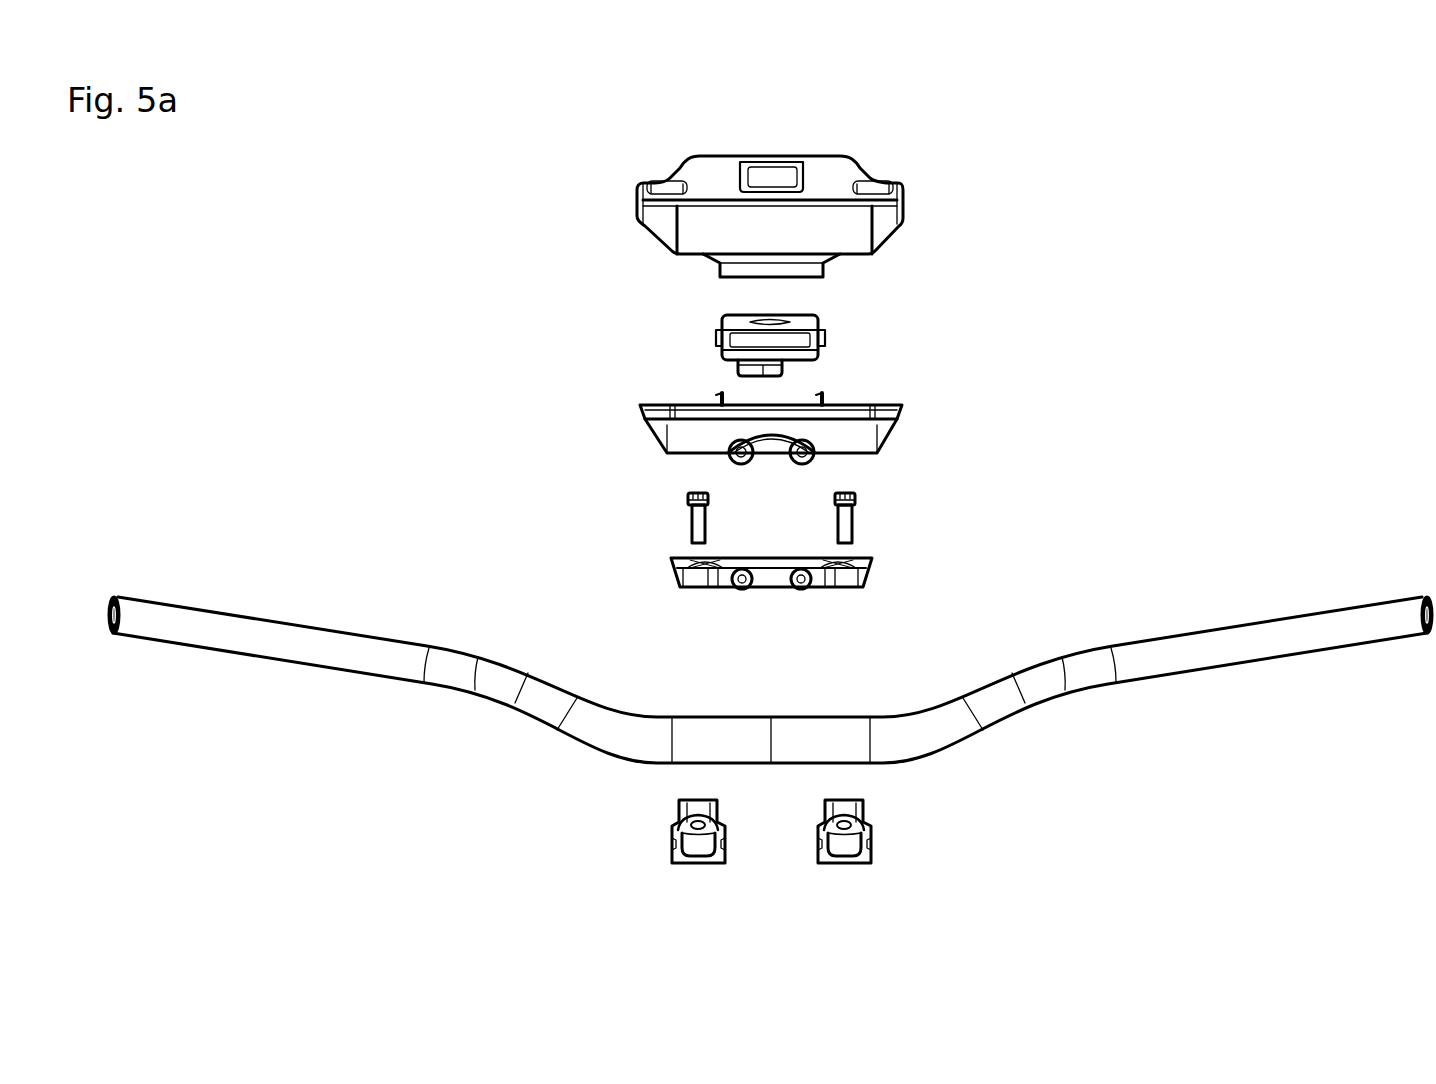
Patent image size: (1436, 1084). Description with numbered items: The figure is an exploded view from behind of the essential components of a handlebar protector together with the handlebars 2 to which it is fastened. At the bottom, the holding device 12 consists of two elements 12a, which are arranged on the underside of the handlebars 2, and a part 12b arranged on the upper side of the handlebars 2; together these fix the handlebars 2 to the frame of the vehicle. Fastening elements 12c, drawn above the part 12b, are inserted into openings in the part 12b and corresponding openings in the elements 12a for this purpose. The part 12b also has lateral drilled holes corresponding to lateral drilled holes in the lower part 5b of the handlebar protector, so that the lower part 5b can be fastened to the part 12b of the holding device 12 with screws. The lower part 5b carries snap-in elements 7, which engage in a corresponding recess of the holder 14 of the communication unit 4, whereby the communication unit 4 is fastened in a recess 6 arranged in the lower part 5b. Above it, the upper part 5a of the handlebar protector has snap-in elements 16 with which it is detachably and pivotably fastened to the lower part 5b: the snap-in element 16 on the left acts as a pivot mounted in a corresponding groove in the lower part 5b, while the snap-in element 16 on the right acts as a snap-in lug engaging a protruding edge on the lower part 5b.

The handlebars 2 is at (313, 651).
The communication unit 4 is at (759, 331).
The upper part 5a is at (786, 225).
The lower part 5b is at (810, 433).
The recess 6 is at (847, 397).
The snap-in elements 7 is at (713, 410).
The holding device 12 is at (884, 707).
The elements of the holding device 12a is at (668, 848).
The part of the holding device 12b is at (772, 578).
The fastening elements 12c is at (692, 520).
The holder 14 is at (720, 337).
The snap-in elements 16 is at (732, 260).